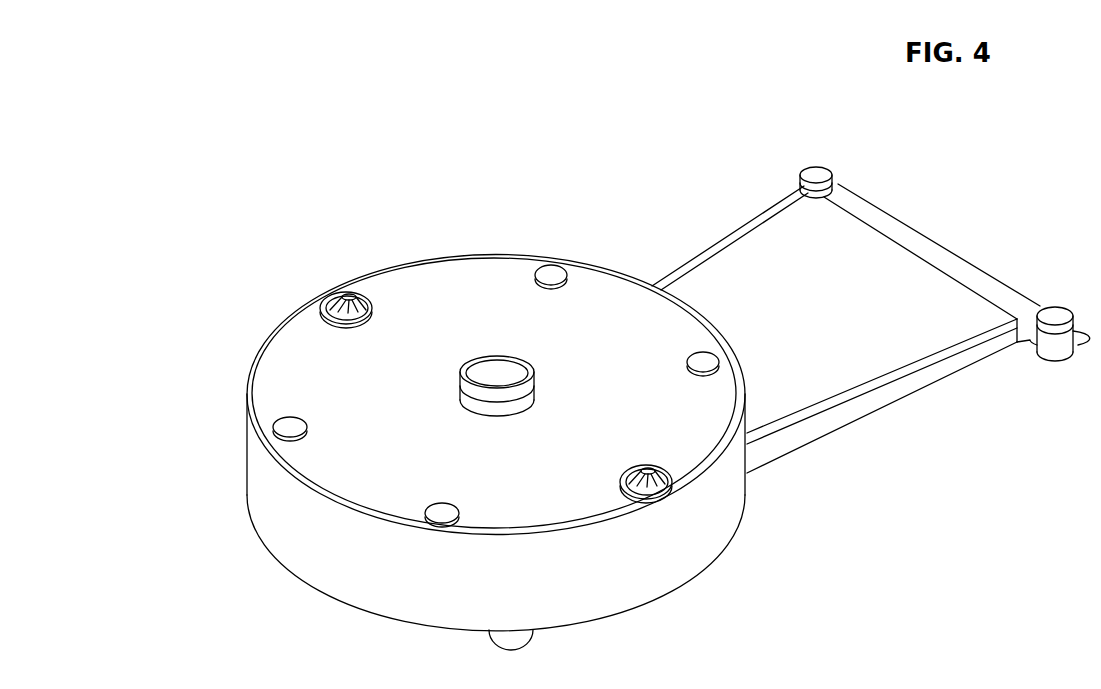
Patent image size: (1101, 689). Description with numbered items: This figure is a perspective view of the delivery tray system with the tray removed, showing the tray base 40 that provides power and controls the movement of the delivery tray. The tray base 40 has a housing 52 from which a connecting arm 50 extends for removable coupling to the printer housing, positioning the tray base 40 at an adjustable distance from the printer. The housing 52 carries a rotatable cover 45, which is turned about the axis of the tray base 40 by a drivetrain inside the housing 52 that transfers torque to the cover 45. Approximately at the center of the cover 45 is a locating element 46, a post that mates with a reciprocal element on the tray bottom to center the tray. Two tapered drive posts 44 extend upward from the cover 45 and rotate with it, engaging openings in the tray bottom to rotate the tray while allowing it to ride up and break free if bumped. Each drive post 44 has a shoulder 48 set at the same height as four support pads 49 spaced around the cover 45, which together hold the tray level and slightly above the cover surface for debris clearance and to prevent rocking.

The tray base 40 is at (208, 410).
The drive post 44 is at (350, 306).
The rotatable cover 45 is at (428, 304).
The locating element 46 is at (497, 352).
The shoulder 48 is at (330, 313).
The support pad 49 is at (563, 266).
The connecting arm 50 is at (714, 228).
The housing 52 is at (326, 537).